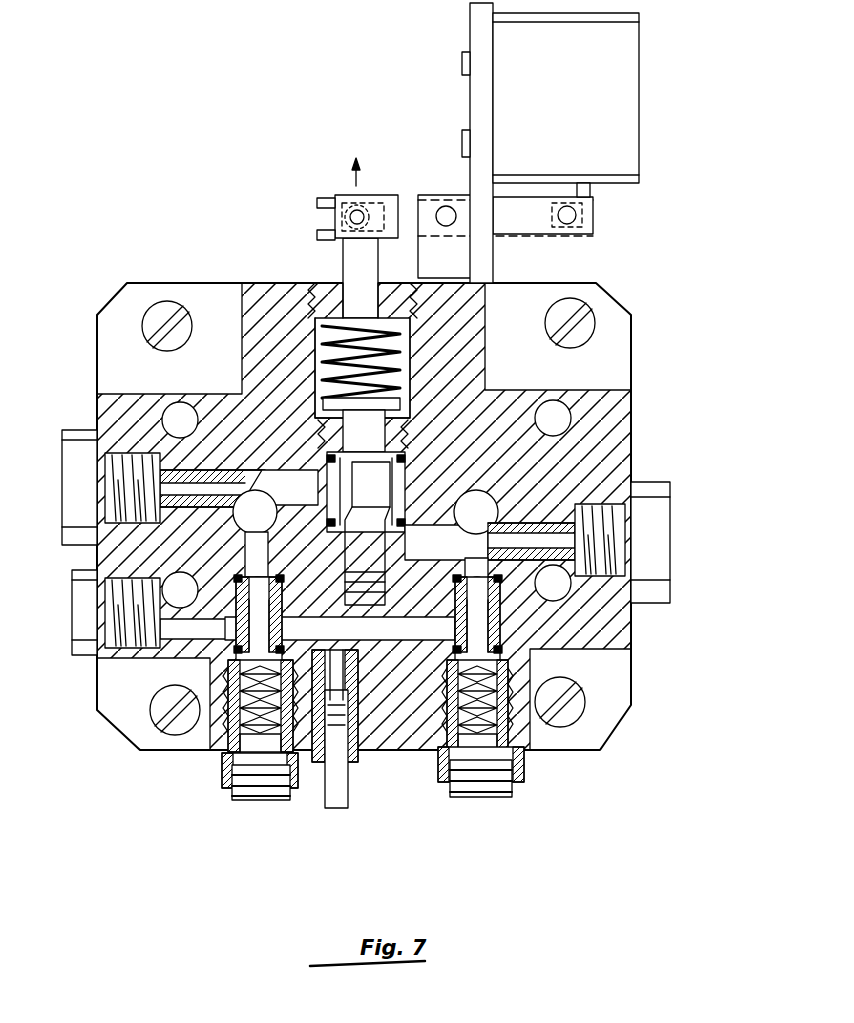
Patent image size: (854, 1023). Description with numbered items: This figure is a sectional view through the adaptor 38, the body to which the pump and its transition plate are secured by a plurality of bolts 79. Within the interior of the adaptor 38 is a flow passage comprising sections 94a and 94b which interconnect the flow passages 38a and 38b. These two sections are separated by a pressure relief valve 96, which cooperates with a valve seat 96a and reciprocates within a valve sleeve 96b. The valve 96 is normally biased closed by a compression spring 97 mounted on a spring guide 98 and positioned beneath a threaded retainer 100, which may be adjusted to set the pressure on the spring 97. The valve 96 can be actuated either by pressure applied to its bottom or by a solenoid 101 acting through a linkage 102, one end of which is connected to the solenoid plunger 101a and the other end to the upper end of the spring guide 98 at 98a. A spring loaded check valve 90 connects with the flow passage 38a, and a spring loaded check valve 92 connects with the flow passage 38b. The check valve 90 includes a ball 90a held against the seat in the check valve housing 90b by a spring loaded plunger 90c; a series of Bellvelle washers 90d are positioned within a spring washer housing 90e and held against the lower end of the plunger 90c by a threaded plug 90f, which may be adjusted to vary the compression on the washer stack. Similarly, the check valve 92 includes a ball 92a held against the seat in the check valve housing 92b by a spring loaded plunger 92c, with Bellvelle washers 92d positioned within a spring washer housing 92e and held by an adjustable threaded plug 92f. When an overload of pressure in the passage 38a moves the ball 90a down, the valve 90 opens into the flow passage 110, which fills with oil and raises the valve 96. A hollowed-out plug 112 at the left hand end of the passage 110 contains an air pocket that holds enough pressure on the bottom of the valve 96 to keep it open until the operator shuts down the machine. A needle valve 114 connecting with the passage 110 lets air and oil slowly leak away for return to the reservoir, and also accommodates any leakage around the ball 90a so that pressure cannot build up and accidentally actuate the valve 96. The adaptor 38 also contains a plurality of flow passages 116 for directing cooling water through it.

The adaptor 38 is at (637, 436).
The flow passage 38a is at (242, 498).
The flow passage 38b is at (498, 522).
The bolts 79 is at (160, 325).
The check valve 90 is at (234, 716).
The ball 90a is at (250, 577).
The check valve housing 90b is at (262, 578).
The spring loaded plunger 90c is at (283, 600).
The Bellvelle washers 90d is at (240, 692).
The spring washer housing 90e is at (228, 762).
The threaded plug 90f is at (262, 800).
The check valve 92 is at (497, 706).
The ball 92a is at (478, 574).
The check valve housing 92b is at (495, 605).
The spring loaded plunger 92c is at (468, 607).
The Bellvelle washers 92d is at (460, 740).
The spring washer housing 92e is at (444, 783).
The threaded plug 92f is at (505, 795).
The flow passage section 94a is at (290, 470).
The flow passage section 94b is at (465, 505).
The pressure relief valve 96 is at (392, 420).
The valve seat 96a is at (398, 520).
The valve sleeve 96b is at (402, 445).
The compression spring 97 is at (395, 380).
The spring guide 98 is at (350, 332).
The upper end of spring guide 98a is at (340, 200).
The threaded retainer 100 is at (343, 282).
The solenoid 101 is at (620, 110).
The solenoid plunger 101a is at (590, 190).
The linkage 102 is at (528, 222).
The flow passage 110 is at (385, 640).
The plug 112 is at (88, 655).
The needle valve 114 is at (340, 808).
The flow passages 116 is at (180, 412).